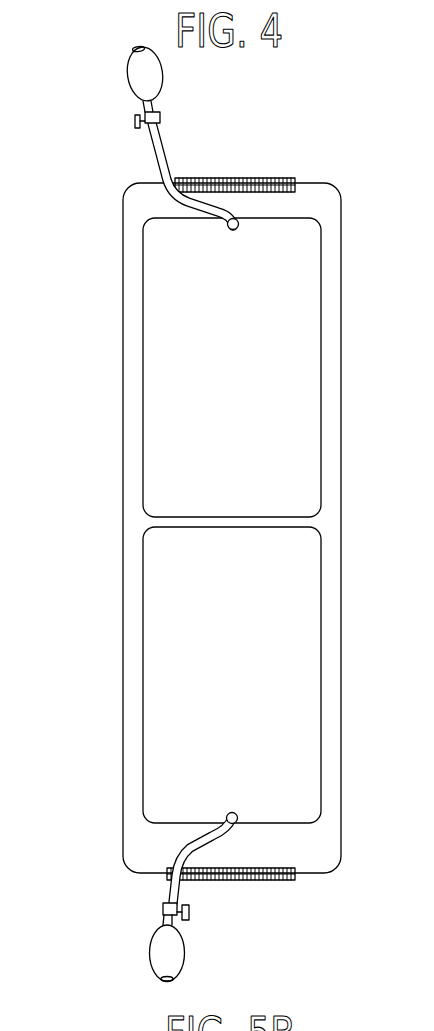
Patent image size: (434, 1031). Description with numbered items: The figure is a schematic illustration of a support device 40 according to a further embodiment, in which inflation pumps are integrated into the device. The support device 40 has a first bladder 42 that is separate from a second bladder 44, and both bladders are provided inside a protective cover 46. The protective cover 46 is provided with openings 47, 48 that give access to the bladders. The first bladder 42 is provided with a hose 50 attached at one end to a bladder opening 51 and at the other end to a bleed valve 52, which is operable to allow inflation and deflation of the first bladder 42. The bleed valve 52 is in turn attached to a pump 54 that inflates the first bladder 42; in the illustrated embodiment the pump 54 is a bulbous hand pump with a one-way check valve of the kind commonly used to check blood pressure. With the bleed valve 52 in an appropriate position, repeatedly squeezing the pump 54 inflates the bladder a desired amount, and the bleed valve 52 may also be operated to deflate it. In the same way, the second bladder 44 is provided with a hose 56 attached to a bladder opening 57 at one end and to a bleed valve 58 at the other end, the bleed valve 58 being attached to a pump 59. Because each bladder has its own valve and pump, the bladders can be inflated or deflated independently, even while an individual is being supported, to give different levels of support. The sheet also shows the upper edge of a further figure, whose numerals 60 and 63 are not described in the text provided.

In FIG. 4, the support device 40 is at (280, 87).
In FIG. 4, the first bladder 42 is at (241, 376).
In FIG. 4, the second bladder 44 is at (241, 676).
In FIG. 4, the protective cover 46 is at (120, 389).
In FIG. 4, the opening 47 is at (293, 178).
In FIG. 4, the opening 48 is at (276, 882).
In FIG. 4, the hose 50 is at (166, 150).
In FIG. 4, the bladder opening 51 is at (232, 231).
In FIG. 4, the bleed valve 52 is at (161, 116).
In FIG. 4, the pump 54 is at (141, 72).
In FIG. 4, the hose 56 is at (177, 847).
In FIG. 4, the bladder opening 57 is at (229, 814).
In FIG. 4, the bleed valve 58 is at (181, 905).
In FIG. 4, the pump 59 is at (181, 954).
In FIG. 5B, the wrap 60 is at (0, 938).
In FIG. 5B, the strap 63 is at (5, 1010).